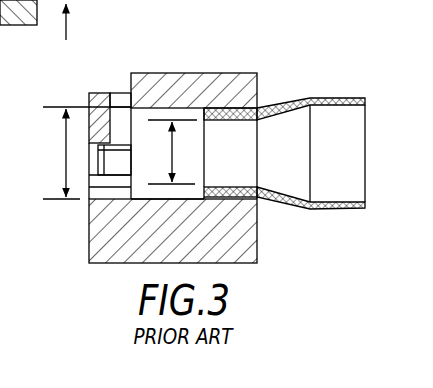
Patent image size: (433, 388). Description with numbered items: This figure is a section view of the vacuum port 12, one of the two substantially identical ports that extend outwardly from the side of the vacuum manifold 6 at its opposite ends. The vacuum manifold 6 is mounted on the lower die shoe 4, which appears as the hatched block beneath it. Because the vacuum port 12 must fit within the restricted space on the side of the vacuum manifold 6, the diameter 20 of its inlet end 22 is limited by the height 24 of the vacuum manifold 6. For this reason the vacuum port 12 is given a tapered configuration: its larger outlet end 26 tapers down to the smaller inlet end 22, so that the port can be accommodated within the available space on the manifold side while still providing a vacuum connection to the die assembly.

The lower die shoe 4 is at (88, 230).
The vacuum manifold 6 is at (185, 73).
The vacuum port 12 is at (336, 96).
The diameter 20 is at (171, 155).
The inlet end 22 is at (220, 102).
The height 24 is at (65, 141).
The outlet end 26 is at (328, 213).